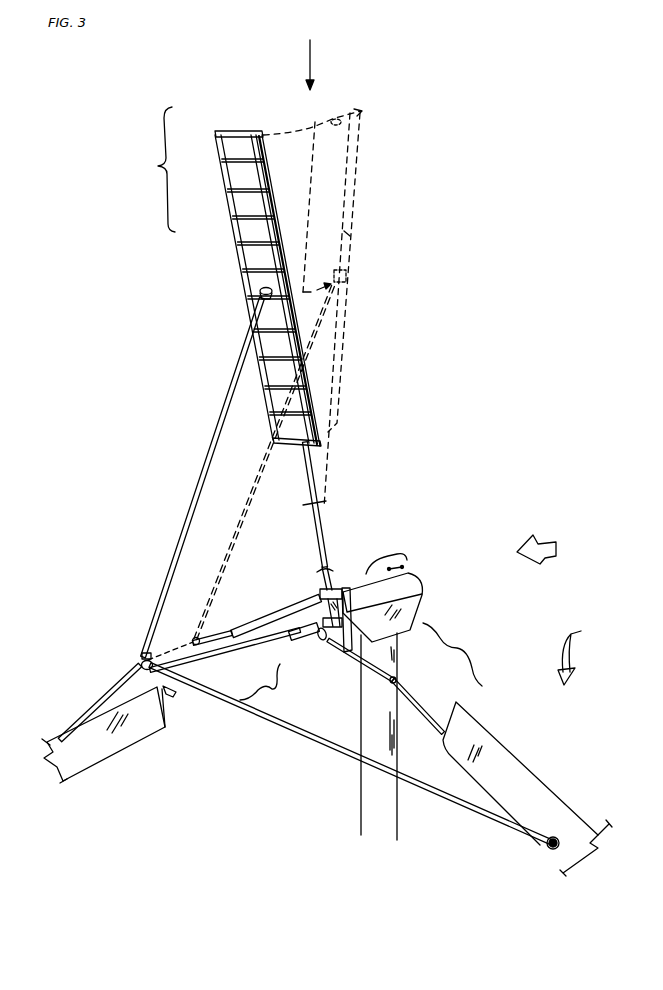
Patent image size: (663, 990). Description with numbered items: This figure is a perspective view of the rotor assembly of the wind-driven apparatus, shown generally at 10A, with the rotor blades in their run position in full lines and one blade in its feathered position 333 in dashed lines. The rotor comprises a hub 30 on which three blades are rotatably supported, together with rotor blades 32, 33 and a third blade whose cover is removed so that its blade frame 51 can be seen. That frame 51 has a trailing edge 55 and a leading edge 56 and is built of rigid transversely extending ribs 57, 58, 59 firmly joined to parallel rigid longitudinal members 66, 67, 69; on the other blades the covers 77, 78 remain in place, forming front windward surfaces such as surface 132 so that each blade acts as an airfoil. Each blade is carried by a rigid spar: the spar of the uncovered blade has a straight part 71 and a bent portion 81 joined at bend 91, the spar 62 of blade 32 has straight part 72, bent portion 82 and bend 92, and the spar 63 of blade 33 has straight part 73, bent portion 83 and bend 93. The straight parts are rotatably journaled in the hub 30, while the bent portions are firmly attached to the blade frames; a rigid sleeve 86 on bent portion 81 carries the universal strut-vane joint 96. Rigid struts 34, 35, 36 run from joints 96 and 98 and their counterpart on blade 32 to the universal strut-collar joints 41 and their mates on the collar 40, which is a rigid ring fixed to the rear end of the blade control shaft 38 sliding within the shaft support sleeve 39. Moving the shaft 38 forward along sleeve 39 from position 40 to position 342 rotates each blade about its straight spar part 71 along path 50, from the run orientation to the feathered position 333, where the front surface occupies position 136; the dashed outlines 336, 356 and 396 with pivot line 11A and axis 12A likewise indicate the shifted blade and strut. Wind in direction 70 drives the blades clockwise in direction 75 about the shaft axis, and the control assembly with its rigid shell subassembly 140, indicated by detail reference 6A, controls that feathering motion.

The solar energy collector apparatus 10A is at (313, 55).
The position of front blade surface 136 is at (333, 115).
The leading edge 56 is at (254, 133).
The trailing edge 55 is at (220, 147).
The blade frame 51 is at (156, 169).
The rib 57 is at (222, 160).
The rib 58 is at (228, 190).
The rib 59 is at (233, 217).
The longitudinal member 69 is at (238, 241).
The sleeve 86 is at (243, 267).
The universal strut-vane joint 96 is at (248, 293).
The pivot bracket 11A is at (255, 302).
The path of blade 50 is at (306, 288).
The panel outline in alternate position 356 is at (360, 149).
The feathered position 333 is at (350, 233).
The pivot in alternate position 396 is at (340, 274).
The pivot axis 12A is at (350, 277).
The strut 34 is at (230, 388).
The longitudinal member 66 is at (296, 408).
The longitudinal member 67 is at (277, 433).
The strut in alternate position 336 is at (250, 494).
The bent spar portion 81 is at (305, 470).
The bend 91 is at (318, 511).
The straight spar part 71 is at (328, 554).
The hub 30 is at (333, 589).
The detail view reference 6A is at (386, 555).
The shell subassembly 140 is at (406, 585).
The wind direction 70 is at (556, 549).
The clockwise rotation arrow 75 is at (577, 655).
The forward collar position 342 is at (195, 637).
The blade control shaft 38 is at (225, 635).
The shaft support sleeve 39 is at (283, 622).
The bend 92 is at (211, 663).
The straight spar part 72 is at (246, 645).
The vane spar 62 is at (262, 682).
The universal strut-collar joint 41 is at (145, 658).
The collar 40 is at (142, 664).
The straight spar part 73 is at (382, 673).
The bend 93 is at (396, 680).
The bent spar portion 83 is at (424, 716).
The vane spar 63 is at (454, 654).
The strut 36 is at (313, 745).
The strut 35 is at (94, 707).
The rotor blade 32 is at (88, 772).
The front windward surface 132 is at (183, 729).
The bent spar portion 82 is at (171, 692).
The cover sheet 77 is at (136, 729).
The rotor blade 33 is at (483, 721).
The cover sheet 78 is at (497, 762).
The universal strut-vane joint 98 is at (556, 838).